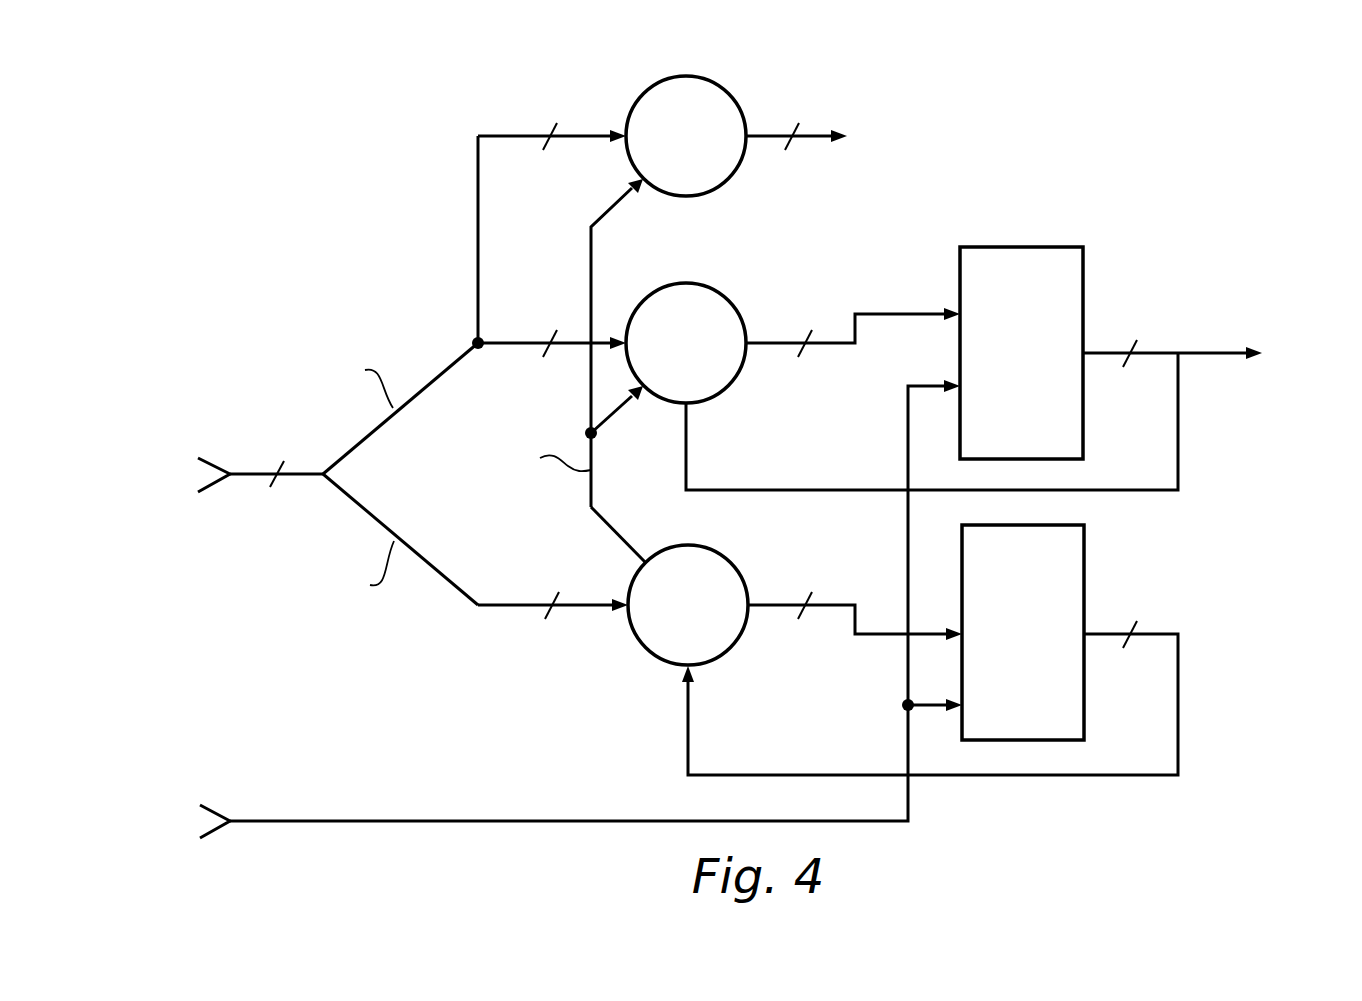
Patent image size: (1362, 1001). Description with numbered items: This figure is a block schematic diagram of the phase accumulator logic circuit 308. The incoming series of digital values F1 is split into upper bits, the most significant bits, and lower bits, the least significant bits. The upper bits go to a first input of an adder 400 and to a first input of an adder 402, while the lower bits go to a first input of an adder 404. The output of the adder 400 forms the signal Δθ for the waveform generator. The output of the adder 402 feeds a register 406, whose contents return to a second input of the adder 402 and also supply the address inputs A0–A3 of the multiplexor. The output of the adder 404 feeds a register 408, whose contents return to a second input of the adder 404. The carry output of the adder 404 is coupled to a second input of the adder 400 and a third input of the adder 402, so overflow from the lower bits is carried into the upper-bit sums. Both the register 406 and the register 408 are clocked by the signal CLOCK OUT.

The phase accumulator logic circuit 308 is at (1122, 172).
The adder 400 is at (690, 76).
The adder 402 is at (690, 283).
The adder 404 is at (731, 562).
The register 406 is at (1155, 353).
The register 408 is at (1049, 632).